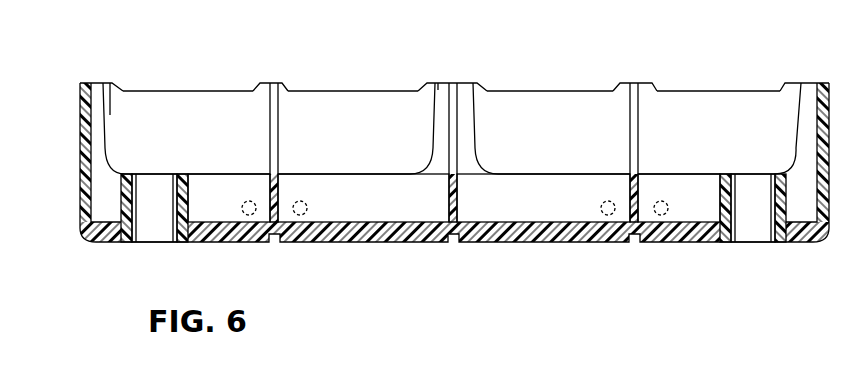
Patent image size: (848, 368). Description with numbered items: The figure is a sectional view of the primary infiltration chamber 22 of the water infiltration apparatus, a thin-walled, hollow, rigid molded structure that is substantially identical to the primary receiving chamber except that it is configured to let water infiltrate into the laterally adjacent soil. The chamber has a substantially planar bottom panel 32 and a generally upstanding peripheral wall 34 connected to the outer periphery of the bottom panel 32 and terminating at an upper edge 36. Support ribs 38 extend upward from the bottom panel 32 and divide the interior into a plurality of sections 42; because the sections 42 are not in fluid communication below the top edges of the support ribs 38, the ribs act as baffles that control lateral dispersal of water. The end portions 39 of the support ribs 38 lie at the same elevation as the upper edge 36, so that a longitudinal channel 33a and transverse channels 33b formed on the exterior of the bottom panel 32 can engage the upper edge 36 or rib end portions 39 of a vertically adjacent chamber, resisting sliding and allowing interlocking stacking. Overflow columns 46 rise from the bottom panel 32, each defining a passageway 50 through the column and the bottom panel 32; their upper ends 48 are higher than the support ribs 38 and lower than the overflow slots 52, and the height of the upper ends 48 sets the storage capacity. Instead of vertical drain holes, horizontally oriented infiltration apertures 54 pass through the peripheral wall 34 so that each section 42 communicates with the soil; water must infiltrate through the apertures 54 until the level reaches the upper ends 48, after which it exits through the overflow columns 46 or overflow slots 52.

The primary infiltration chamber 22 is at (79, 81).
The bottom panel 32 is at (685, 243).
The longitudinal channel 33a is at (97, 245).
The transverse channel 33b is at (273, 240).
The peripheral wall 34 is at (80, 133).
The upper edge 36 is at (277, 83).
The support rib 38 is at (103, 115).
The end portion 39 is at (110, 84).
The section 42 is at (201, 203).
The overflow column 46 is at (183, 173).
The upper end 48 is at (158, 173).
The passageway 50 is at (142, 211).
The overflow slot 52 is at (178, 90).
The infiltration aperture 54 is at (84, 208).